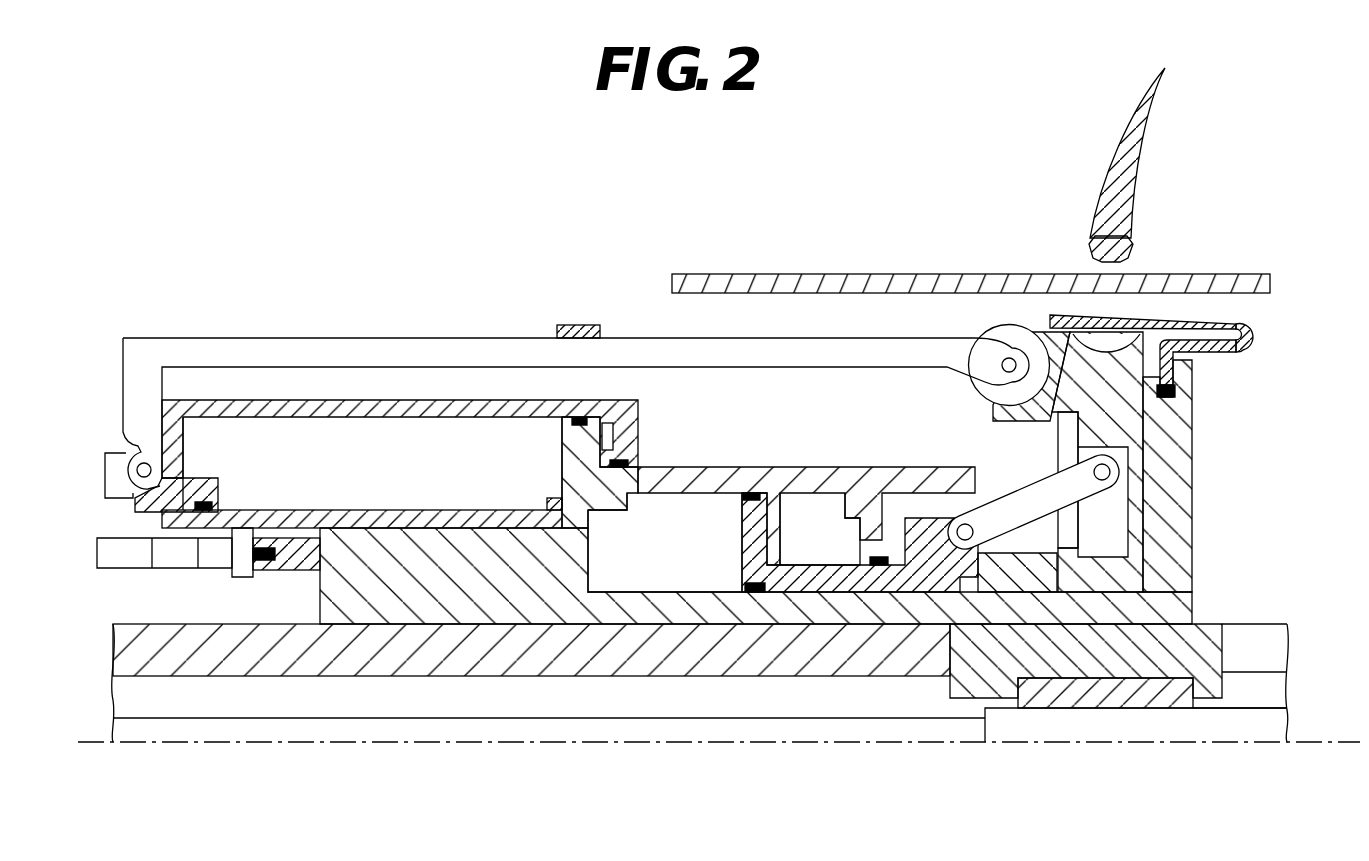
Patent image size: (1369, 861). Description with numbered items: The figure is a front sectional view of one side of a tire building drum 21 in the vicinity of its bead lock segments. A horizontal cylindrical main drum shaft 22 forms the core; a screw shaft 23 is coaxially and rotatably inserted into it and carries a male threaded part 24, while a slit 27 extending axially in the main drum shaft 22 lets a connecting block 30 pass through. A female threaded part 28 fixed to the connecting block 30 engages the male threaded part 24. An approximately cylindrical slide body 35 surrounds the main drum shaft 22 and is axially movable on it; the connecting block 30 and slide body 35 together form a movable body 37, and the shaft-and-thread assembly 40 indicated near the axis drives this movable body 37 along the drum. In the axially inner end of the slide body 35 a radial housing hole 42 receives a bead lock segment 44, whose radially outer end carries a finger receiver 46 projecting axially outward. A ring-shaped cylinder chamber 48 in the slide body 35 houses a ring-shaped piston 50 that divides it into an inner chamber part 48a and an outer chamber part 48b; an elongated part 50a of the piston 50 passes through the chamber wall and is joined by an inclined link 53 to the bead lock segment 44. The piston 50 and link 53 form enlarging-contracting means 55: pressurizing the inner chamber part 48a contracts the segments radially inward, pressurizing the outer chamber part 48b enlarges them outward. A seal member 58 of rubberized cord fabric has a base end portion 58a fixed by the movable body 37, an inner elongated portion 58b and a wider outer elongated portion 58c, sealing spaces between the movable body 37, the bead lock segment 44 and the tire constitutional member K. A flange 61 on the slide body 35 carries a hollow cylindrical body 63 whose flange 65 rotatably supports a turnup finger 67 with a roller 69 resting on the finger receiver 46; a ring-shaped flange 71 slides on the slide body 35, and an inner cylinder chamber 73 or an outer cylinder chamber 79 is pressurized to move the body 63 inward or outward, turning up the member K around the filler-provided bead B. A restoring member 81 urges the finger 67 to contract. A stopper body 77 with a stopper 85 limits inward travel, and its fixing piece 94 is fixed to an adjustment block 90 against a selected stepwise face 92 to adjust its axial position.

The tire building drum 21 is at (497, 324).
The main drum shaft 22 is at (150, 656).
The screw shaft 23 is at (462, 733).
The male threaded part 24 is at (1050, 730).
The slit 27 is at (1248, 648).
The female threaded part 28 is at (1135, 692).
The connecting block 30 is at (973, 677).
The slide body 35 is at (556, 610).
The movable body 37 is at (810, 682).
The drive unit 40 is at (1215, 746).
The housing hole 42 is at (1135, 510).
The bead lock segment 44 is at (1110, 422).
The finger receiver 46 is at (995, 423).
The cylinder chamber 48 is at (697, 525).
The inner chamber part 48a is at (812, 525).
The outer chamber part 48b is at (648, 527).
The piston 50 is at (777, 525).
The elongated part 50a is at (767, 558).
The link 53 is at (1032, 497).
The enlarging-contracting means 55 is at (1200, 518).
The seal member 58 is at (1253, 340).
The base end portion 58a is at (1195, 410).
The inner elongated portion 58b is at (1222, 355).
The outer elongated portion 58c is at (1205, 322).
The flange 61 is at (577, 482).
The hollow cylindrical body 63 is at (430, 400).
The flange 65 is at (190, 452).
The turnup finger 67 is at (315, 352).
The roller 69 is at (1003, 340).
The flange 71 is at (637, 418).
The inner cylinder chamber 73 is at (606, 438).
The stopper body 77 is at (372, 510).
The outer cylinder chamber 79 is at (326, 465).
The restoring member 81 is at (583, 325).
The stopper 85 is at (548, 498).
The adjustment block 90 is at (290, 558).
The stepwise face 92 is at (150, 553).
The fixing piece 94 is at (243, 577).
The filler-provided bead B is at (1100, 190).
The tire constitutional member K is at (810, 274).